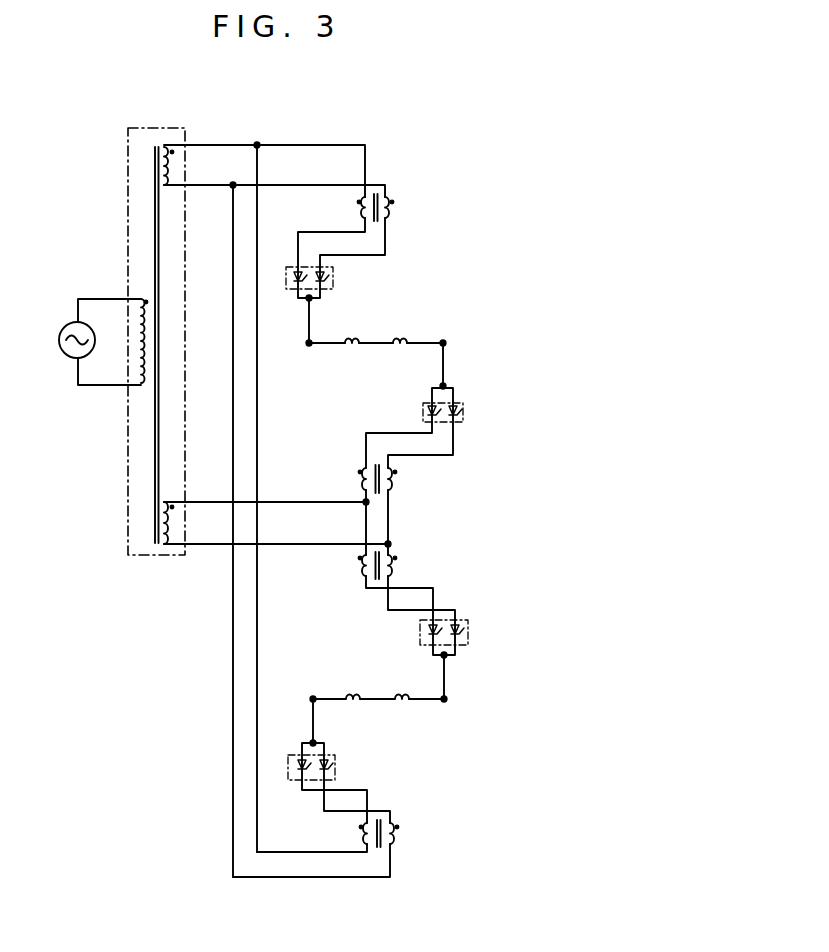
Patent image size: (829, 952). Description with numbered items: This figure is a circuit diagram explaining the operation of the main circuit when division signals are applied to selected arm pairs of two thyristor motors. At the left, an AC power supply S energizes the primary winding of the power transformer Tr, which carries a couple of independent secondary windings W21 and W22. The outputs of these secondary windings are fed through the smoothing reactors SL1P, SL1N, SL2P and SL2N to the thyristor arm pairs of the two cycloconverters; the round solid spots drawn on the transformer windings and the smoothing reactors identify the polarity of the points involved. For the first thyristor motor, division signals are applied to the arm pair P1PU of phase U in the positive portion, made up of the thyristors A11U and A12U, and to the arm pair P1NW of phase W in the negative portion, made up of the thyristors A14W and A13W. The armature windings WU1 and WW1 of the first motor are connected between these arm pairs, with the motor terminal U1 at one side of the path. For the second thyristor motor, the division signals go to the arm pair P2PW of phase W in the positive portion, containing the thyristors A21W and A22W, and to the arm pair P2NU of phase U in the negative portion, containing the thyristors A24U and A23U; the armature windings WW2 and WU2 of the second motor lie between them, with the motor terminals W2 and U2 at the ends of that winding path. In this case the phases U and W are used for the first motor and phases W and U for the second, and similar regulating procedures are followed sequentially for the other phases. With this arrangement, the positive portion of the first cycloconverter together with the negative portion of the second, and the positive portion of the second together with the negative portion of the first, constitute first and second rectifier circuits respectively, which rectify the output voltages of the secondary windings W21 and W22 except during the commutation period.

The power transformer Tr is at (170, 128).
The AC power supply S is at (60, 338).
The secondary winding W21 is at (173, 172).
The secondary winding W22 is at (173, 532).
The smoothing reactor SL1P is at (374, 230).
The arm pair P1PU is at (334, 289).
The thyristor A11U is at (298, 270).
The thyristor A12U is at (325, 276).
The motor terminal U1 is at (309, 345).
The armature winding WU1 is at (350, 347).
The armature winding WW1 is at (404, 347).
The arm pair P1NW is at (463, 404).
The thyristor A14W is at (428, 409).
The thyristor A13W is at (457, 411).
The smoothing reactor SL1N is at (390, 481).
The smoothing reactor SL2P is at (392, 563).
The arm pair P2PW is at (458, 640).
The thyristor A21W is at (432, 630).
The thyristor A22W is at (456, 626).
The motor terminal W2 is at (444, 699).
The armature winding WW2 is at (402, 703).
The armature winding WU2 is at (350, 703).
The motor terminal U2 is at (313, 697).
The arm pair P2NU is at (331, 758).
The thyristor A24U is at (300, 774).
The thyristor A23U is at (327, 768).
The smoothing reactor SL2N is at (392, 839).